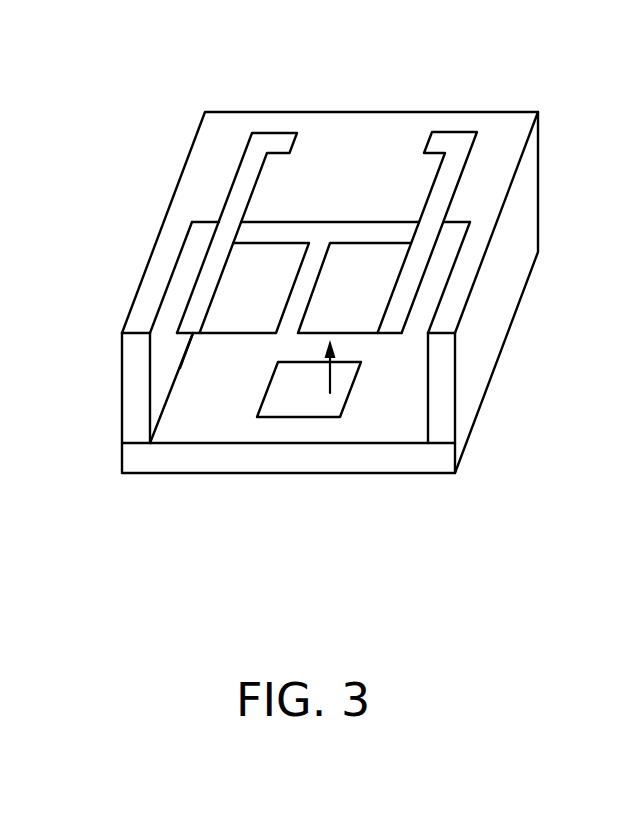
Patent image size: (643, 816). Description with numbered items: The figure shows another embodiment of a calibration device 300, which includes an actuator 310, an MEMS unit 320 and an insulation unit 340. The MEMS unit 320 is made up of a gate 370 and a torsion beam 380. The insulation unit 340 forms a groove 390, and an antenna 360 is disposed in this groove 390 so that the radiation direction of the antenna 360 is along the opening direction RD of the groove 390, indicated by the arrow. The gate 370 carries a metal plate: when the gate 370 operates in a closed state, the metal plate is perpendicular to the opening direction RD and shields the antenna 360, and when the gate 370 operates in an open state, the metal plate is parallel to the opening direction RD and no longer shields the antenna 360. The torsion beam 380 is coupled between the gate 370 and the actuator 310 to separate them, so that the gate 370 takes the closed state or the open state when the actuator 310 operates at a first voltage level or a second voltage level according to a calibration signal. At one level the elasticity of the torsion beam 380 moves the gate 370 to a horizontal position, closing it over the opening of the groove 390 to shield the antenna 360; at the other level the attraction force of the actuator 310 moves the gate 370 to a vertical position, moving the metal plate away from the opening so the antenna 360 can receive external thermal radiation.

The calibration device 300 is at (323, 293).
The actuator 310 is at (497, 296).
The MEMS unit 320 is at (246, 247).
The insulation unit 340 is at (443, 386).
The antenna 360 is at (302, 408).
The gate 370 is at (232, 285).
The torsion beam 380 is at (243, 186).
The groove 390 is at (196, 387).
The opening direction RD is at (335, 370).